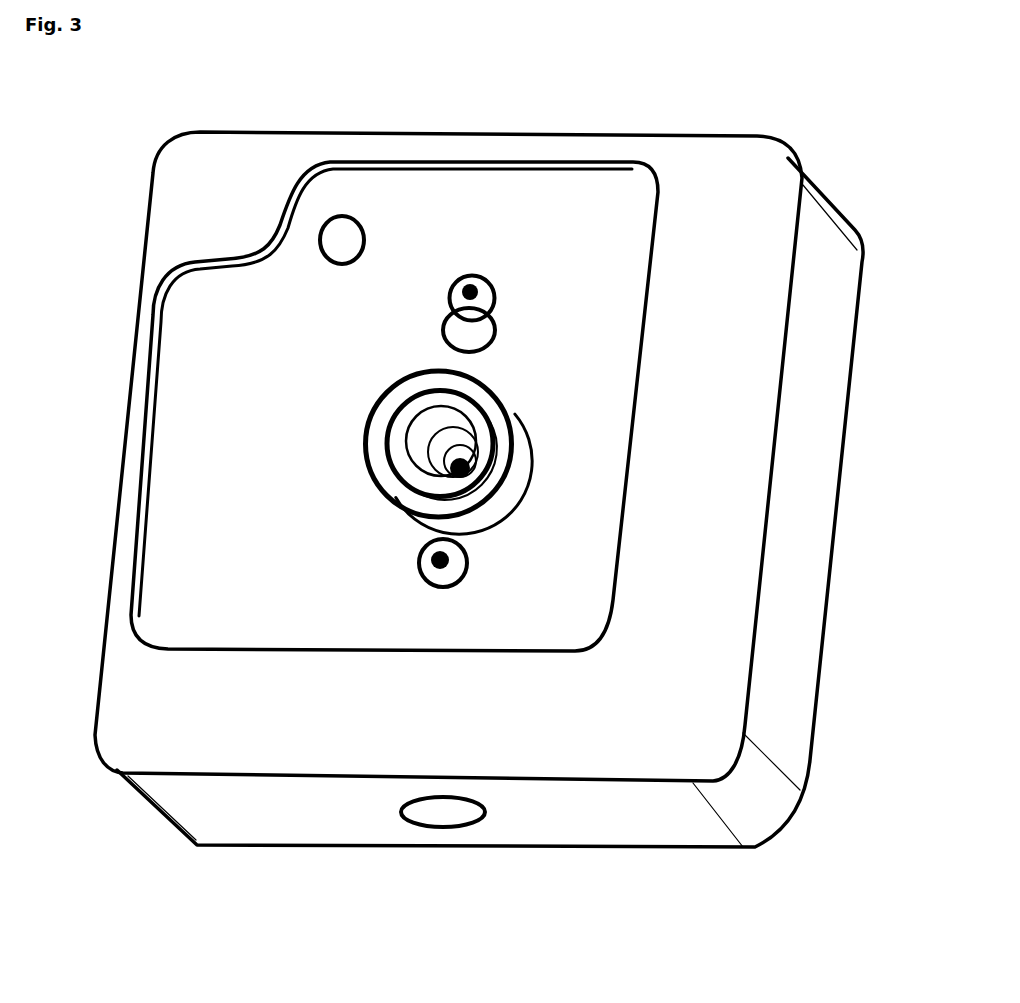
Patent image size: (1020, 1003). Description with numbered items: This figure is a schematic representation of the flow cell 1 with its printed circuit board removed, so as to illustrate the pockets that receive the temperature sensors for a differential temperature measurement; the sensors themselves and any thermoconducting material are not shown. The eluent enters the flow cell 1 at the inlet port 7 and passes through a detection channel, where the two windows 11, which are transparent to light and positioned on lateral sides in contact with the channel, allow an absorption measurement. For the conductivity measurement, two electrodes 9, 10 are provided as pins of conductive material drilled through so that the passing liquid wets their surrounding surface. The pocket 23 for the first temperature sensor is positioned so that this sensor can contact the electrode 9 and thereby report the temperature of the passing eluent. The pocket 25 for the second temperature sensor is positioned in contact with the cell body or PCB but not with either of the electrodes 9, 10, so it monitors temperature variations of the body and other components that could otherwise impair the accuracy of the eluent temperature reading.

The flow cell 1 is at (831, 120).
The inlet port 7 is at (453, 818).
The electrode 9 is at (432, 298).
The electrode 10 is at (415, 575).
The window 11 is at (462, 468).
The pocket 23 is at (485, 333).
The pocket 25 is at (341, 222).